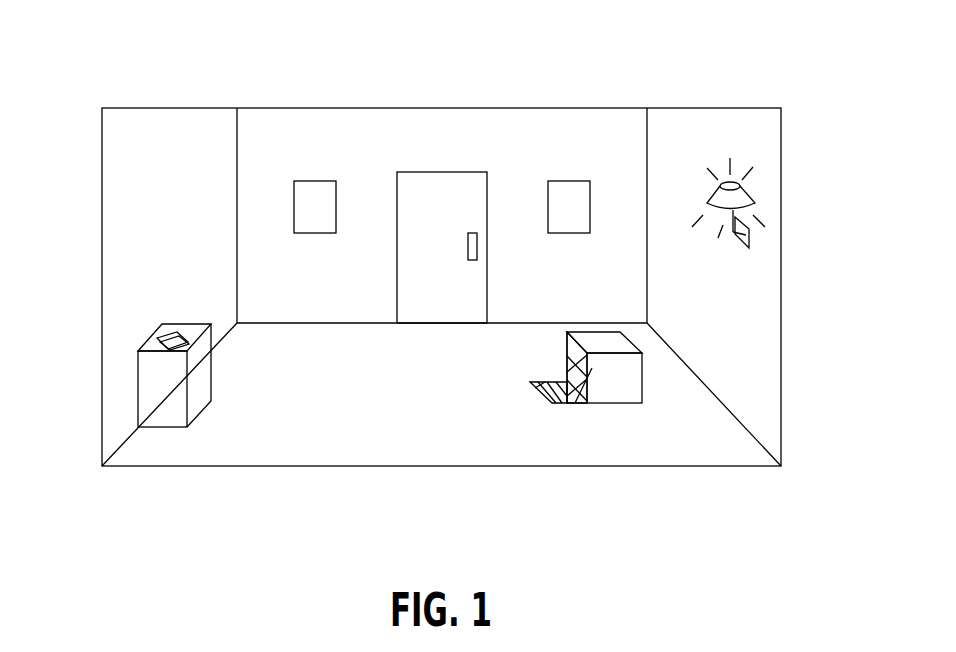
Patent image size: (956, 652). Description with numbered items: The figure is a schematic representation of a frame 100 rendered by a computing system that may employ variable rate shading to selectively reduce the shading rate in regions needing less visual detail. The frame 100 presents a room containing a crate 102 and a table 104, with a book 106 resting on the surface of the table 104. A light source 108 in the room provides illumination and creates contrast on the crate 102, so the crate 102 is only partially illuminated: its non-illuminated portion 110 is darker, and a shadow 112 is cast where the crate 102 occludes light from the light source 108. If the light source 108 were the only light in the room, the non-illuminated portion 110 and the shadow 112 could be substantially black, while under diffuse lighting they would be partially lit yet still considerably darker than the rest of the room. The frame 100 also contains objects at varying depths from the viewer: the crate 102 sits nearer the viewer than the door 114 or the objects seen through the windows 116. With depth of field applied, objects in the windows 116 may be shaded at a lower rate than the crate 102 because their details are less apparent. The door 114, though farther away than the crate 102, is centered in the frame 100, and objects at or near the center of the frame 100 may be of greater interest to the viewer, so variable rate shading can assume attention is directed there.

The frame 100 is at (753, 58).
The crate 102 is at (630, 377).
The table 104 is at (157, 386).
The book 106 is at (160, 337).
The light source 108 is at (736, 201).
The non-illuminated portion 110 is at (587, 373).
The shadow 112 is at (567, 405).
The door 114 is at (319, 207).
The windows 116 is at (570, 207).